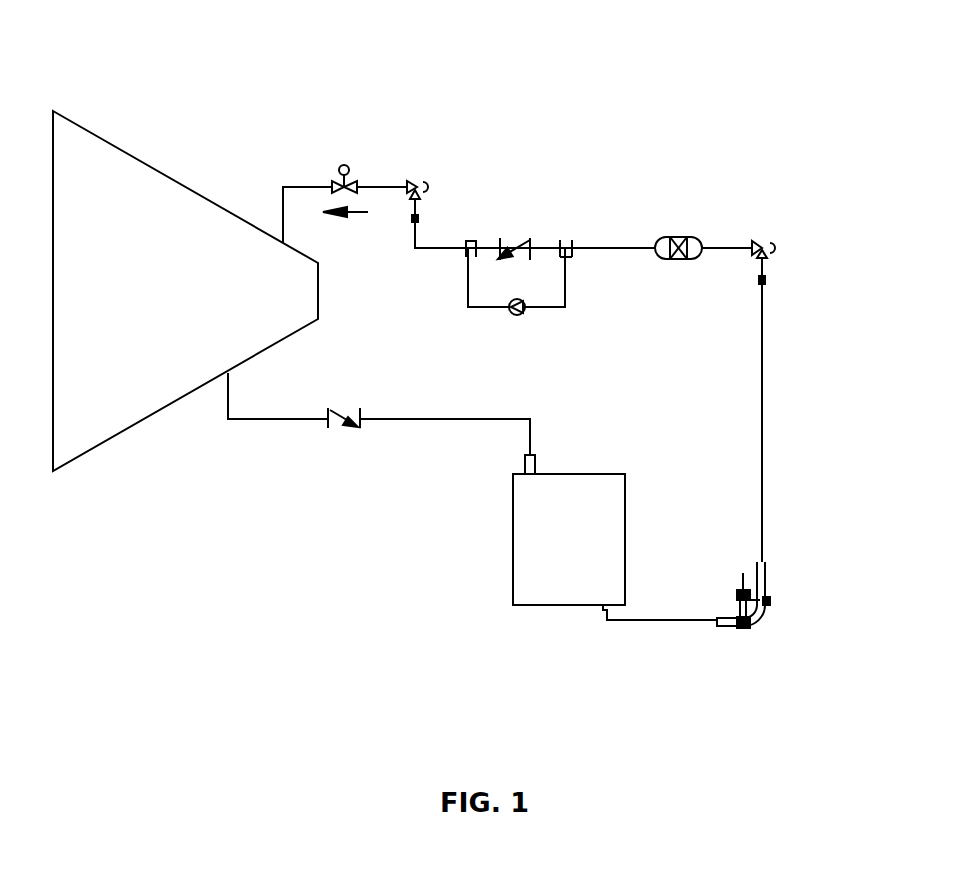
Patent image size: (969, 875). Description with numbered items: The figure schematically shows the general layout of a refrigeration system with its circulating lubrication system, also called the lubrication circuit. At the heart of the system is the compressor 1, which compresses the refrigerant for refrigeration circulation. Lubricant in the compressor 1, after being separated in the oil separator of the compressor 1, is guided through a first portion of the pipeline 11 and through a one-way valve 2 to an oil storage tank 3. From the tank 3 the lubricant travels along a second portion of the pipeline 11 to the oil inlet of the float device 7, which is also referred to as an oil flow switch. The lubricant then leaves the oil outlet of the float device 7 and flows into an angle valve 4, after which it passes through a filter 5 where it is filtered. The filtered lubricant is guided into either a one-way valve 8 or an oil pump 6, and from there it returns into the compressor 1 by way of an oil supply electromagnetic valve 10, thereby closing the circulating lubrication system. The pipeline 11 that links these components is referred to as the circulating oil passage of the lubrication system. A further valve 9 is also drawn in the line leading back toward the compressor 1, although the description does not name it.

The compressor 1 is at (185, 316).
The one-way valve 2 is at (360, 462).
The oil storage tank 3 is at (569, 585).
The angle valve 4 is at (785, 192).
The filter 5 is at (686, 178).
The oil pump 6 is at (519, 320).
The float device 7 is at (807, 537).
The one-way valve 8 is at (534, 179).
The shut-off valve 9 is at (438, 130).
The oil supply electromagnetic valve 10 is at (361, 107).
The pipeline 11 is at (679, 604).